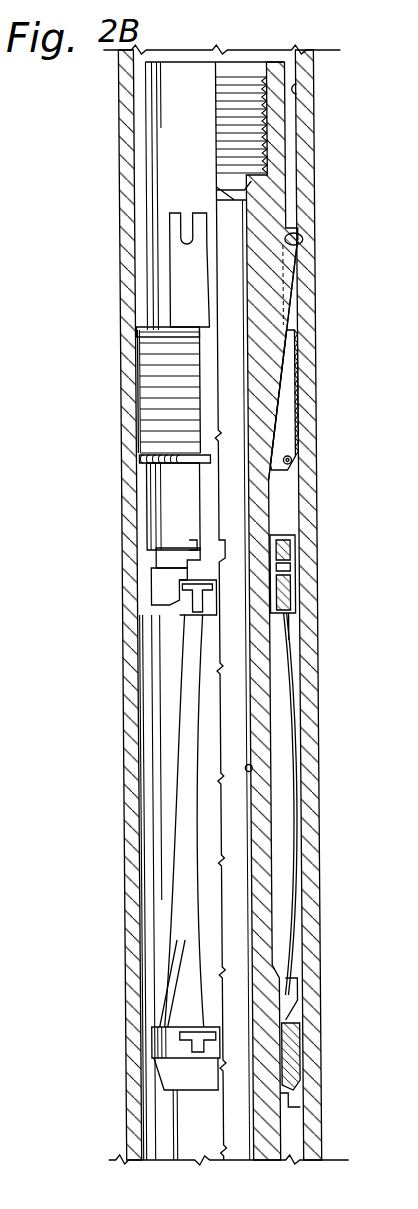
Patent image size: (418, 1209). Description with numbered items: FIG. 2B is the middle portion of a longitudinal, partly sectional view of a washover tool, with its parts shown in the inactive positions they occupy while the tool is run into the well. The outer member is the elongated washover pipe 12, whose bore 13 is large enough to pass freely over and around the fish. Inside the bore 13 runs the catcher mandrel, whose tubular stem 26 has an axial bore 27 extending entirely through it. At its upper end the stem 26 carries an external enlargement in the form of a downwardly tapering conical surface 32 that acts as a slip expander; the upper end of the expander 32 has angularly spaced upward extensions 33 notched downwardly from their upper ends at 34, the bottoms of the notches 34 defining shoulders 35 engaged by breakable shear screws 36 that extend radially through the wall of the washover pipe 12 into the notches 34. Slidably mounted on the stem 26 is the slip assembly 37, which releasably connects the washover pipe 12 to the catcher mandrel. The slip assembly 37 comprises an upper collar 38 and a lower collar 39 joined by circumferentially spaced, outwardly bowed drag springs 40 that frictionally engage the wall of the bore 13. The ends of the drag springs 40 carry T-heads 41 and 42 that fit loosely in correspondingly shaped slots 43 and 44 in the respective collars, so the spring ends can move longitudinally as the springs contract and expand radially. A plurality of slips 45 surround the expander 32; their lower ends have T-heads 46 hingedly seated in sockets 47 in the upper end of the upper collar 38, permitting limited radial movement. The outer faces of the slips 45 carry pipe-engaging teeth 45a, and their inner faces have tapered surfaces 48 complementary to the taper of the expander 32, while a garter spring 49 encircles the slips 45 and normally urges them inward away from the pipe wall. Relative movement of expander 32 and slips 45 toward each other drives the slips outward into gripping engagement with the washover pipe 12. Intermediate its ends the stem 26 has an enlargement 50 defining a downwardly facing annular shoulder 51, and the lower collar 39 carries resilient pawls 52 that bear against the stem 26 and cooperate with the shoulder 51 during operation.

The washover pipe 12 is at (307, 133).
The bore 13 is at (296, 89).
The tubular stem 26 is at (262, 722).
The axial bore 27 is at (248, 770).
The conical surface 32 is at (290, 307).
The upward extensions 33 is at (168, 273).
The notches 34 is at (188, 200).
The shoulders 35 is at (178, 244).
The shear screws 36 is at (302, 240).
The slip assembly 37 is at (288, 640).
The upper collar 38 is at (147, 593).
The lower collar 39 is at (158, 1050).
The drag springs 40 is at (172, 800).
The T-head 41 is at (153, 580).
The T-head 42 is at (155, 1040).
The slot 43 is at (148, 601).
The slot 44 is at (176, 1059).
The slips 45 is at (140, 333).
The pipe-engaging teeth 45a is at (138, 408).
The T-heads 46 is at (163, 557).
The sockets 47 is at (192, 542).
The tapered surfaces 48 is at (297, 363).
The garter spring 49 is at (289, 461).
The enlargement 50 is at (292, 986).
The annular shoulder 51 is at (272, 1106).
The pawls 52 is at (160, 998).